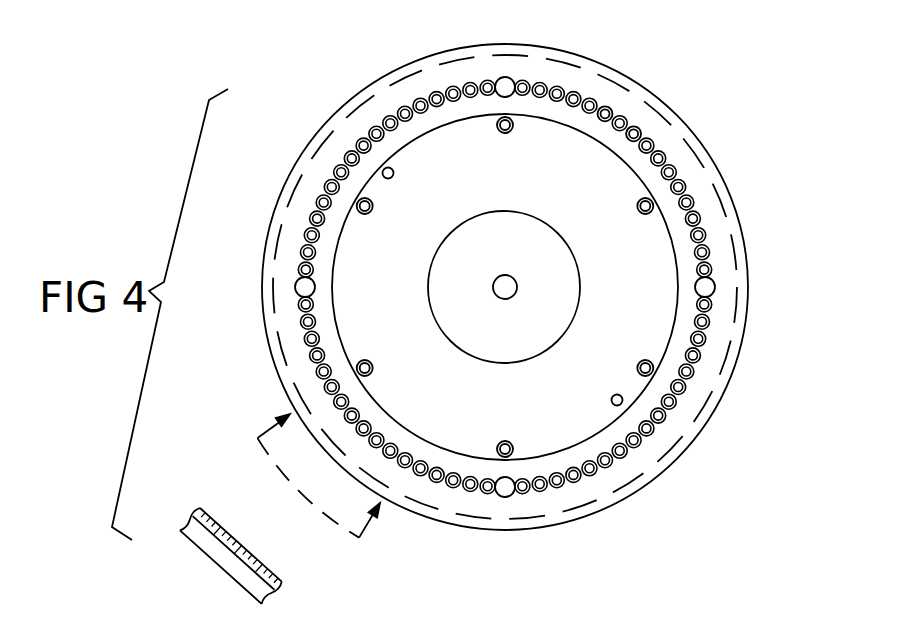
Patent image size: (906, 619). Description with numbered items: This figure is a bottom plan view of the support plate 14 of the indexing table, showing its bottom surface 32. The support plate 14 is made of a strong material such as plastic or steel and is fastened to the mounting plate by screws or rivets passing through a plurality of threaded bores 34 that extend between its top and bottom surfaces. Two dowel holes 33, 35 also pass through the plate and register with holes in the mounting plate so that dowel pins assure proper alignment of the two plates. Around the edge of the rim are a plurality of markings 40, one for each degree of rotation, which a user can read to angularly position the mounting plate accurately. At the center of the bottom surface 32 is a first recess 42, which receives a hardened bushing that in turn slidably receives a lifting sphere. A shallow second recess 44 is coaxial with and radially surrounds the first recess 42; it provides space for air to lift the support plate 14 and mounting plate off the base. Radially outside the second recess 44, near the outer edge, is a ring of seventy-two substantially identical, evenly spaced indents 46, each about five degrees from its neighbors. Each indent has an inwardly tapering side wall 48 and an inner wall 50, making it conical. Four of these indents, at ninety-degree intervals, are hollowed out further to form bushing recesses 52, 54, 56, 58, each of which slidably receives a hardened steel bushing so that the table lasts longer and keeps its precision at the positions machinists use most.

The support plate 14 is at (745, 233).
The bottom surface 32 is at (280, 234).
The dowel hole 33 is at (383, 173).
The threaded bore 34 is at (660, 368).
The dowel hole 35 is at (622, 400).
The markings 40 is at (226, 516).
The first recess 42 is at (500, 287).
The second recess 44 is at (347, 325).
The indents 46 is at (612, 107).
The inwardly tapering side wall 48 is at (605, 109).
The inner wall 50 is at (632, 133).
The bushing recess 52 is at (504, 85).
The bushing recess 54 is at (706, 287).
The bushing recess 56 is at (505, 490).
The bushing recess 58 is at (302, 287).